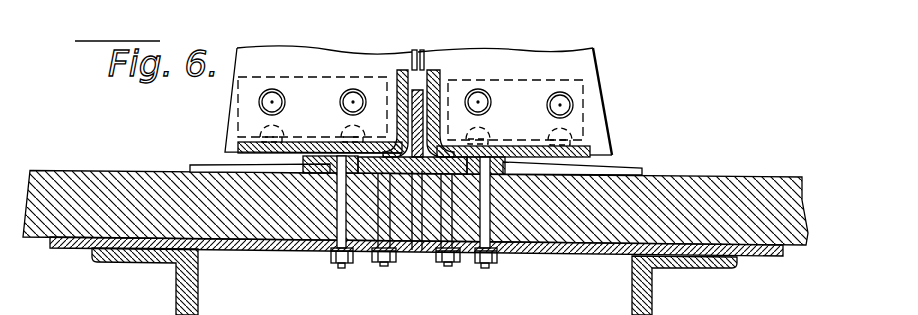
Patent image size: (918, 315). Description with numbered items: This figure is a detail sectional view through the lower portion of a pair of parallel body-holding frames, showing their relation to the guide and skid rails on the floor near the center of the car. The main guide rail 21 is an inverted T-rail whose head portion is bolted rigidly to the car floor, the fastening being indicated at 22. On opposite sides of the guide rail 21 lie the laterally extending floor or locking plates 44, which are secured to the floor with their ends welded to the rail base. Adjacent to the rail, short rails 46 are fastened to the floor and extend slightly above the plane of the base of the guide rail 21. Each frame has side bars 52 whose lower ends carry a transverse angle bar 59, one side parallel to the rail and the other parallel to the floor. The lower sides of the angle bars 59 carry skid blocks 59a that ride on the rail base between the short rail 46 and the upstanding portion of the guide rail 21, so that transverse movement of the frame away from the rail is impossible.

The guide rail 21 is at (418, 254).
The bolts 22 is at (420, 238).
The floor plates 44 is at (190, 167).
The short rails 46 is at (338, 168).
The side bars 52 is at (254, 52).
The angle bar 59 is at (397, 108).
The skid blocks 59a is at (503, 108).